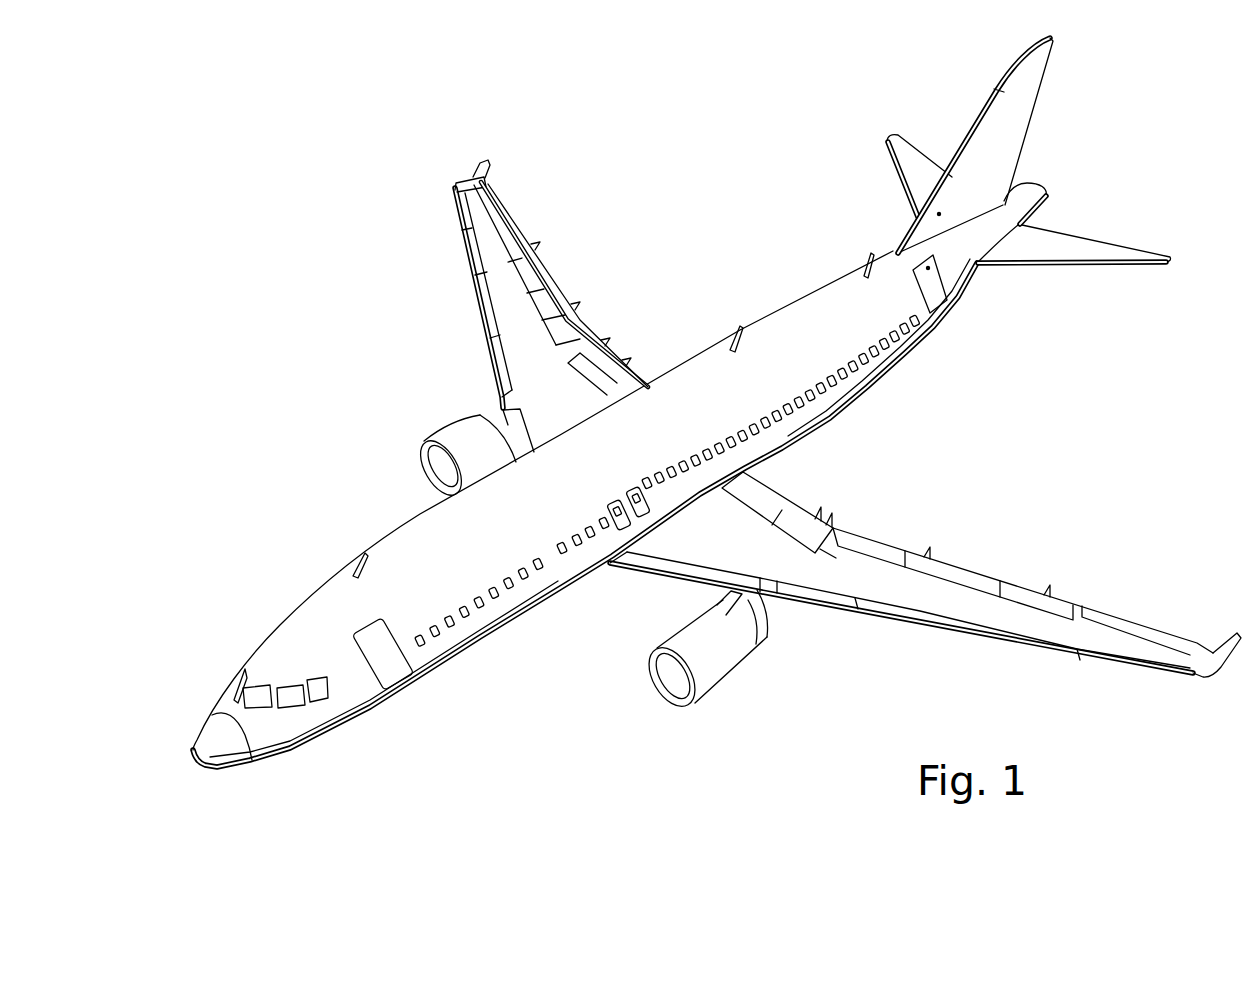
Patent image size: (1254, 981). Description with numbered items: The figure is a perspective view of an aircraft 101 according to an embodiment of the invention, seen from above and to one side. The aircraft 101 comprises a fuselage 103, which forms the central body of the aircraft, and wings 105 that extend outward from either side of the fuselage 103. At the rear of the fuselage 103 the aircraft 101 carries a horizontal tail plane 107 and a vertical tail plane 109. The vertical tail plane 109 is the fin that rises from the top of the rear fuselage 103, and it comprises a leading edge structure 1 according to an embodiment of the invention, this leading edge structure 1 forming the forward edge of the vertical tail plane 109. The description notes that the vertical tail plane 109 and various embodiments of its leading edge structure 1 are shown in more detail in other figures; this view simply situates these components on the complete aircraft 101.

The leading edge structure 1 is at (994, 89).
The aircraft 101 is at (240, 351).
The fuselage 103 is at (318, 618).
The wings 105 is at (513, 304).
The horizontal tail plane 107 is at (913, 168).
The vertical tail plane 109 is at (1020, 83).